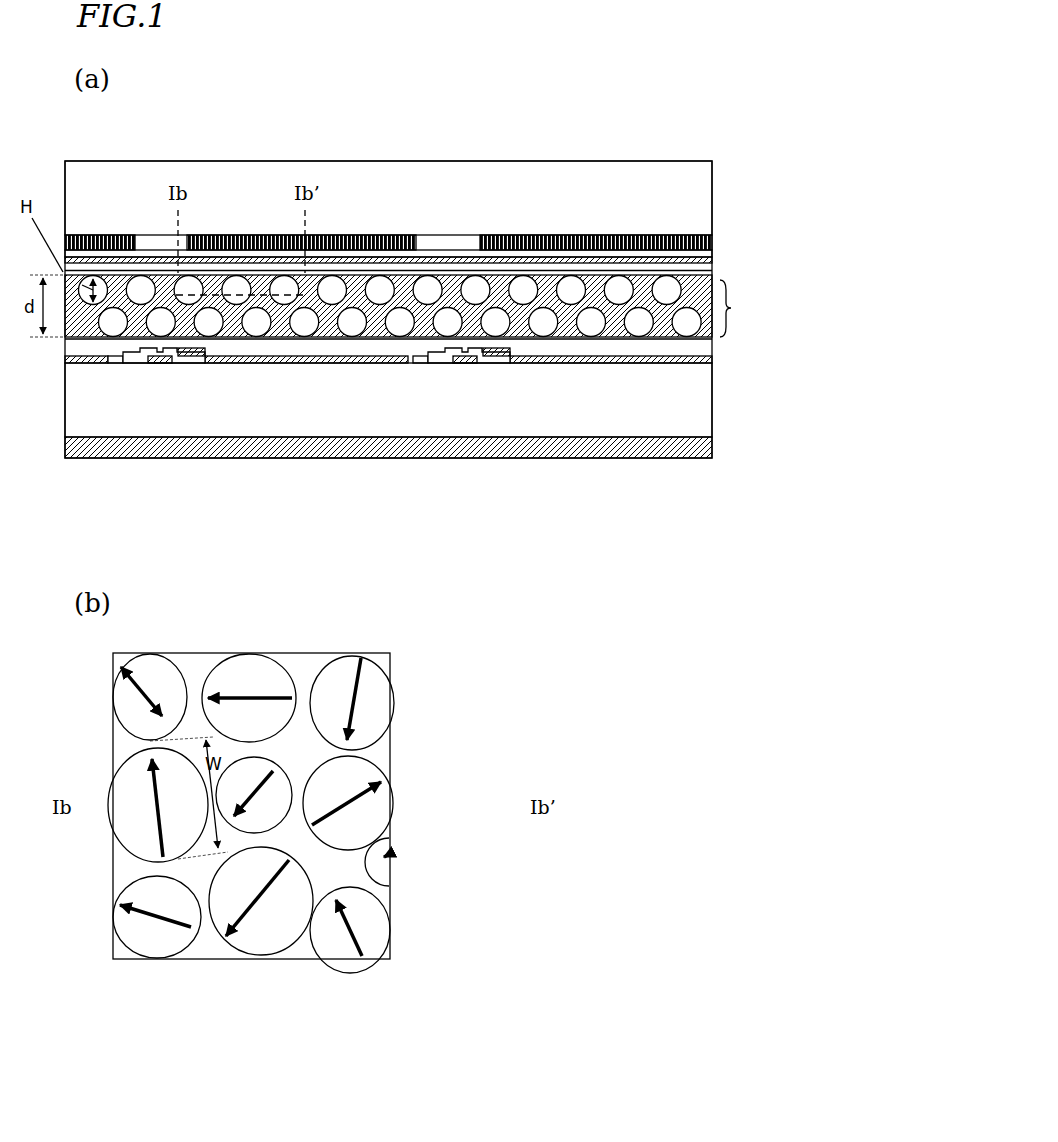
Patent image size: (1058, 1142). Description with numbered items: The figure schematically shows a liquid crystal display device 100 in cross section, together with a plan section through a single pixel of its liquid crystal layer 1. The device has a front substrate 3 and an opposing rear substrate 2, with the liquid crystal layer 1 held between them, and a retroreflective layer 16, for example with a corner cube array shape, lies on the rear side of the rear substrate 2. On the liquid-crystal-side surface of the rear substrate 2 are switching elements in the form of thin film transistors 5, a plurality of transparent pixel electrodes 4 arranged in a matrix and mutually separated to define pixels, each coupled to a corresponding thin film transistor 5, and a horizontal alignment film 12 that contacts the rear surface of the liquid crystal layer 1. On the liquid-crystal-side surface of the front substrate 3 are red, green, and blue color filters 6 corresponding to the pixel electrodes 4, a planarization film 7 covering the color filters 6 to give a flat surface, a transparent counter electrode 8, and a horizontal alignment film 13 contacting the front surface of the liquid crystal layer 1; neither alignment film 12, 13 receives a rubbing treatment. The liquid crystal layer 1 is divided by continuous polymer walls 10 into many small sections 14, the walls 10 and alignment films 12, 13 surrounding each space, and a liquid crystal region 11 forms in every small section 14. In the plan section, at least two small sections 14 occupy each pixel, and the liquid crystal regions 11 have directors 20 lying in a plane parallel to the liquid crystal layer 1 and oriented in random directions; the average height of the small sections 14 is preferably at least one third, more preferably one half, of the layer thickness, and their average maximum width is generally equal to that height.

The liquid crystal display device 100 is at (692, 113).
The front substrate 3 is at (697, 198).
The color filters 6 is at (522, 236).
The planarization film 7 is at (594, 252).
The transparent counter electrode 8 is at (712, 263).
The alignment film 13 is at (715, 272).
The liquid crystal layer 1 is at (407, 306).
The alignment film 12 is at (705, 350).
The transparent pixel electrodes 4 is at (600, 363).
The thin film transistors 5 is at (463, 363).
The rear substrate 2 is at (698, 396).
The retroreflective layer 16 is at (715, 452).
The walls 10 is at (137, 345).
The liquid crystal region 11 is at (208, 322).
The small sections 14 is at (222, 333).
The directors 20 is at (262, 692).